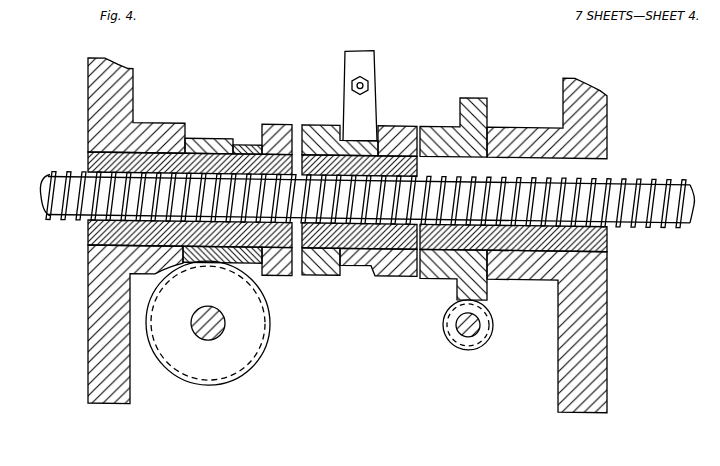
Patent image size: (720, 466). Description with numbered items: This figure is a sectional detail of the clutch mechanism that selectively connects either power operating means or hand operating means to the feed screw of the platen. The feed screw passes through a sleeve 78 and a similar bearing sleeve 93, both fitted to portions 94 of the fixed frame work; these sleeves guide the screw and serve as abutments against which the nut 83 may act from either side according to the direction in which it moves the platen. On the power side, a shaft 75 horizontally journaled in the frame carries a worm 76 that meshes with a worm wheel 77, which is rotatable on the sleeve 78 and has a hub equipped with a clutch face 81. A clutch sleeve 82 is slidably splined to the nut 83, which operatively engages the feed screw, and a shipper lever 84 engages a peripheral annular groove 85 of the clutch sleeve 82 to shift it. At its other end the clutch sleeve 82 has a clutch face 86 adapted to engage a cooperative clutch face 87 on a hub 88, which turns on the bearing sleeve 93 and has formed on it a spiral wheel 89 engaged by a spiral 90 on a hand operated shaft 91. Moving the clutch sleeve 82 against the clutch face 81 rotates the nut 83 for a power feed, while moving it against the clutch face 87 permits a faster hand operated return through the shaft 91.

The shaft 75 is at (468, 333).
The worm 76 is at (487, 340).
The worm wheel 77 is at (484, 302).
The sleeve 78 is at (607, 243).
The clutch face 81 is at (426, 130).
The clutch sleeve 82 is at (412, 130).
The nut 83 is at (338, 273).
The shipper lever 84 is at (376, 97).
The peripheral annular groove 85 is at (370, 268).
The clutch face 86 is at (320, 122).
The clutch face 87 is at (286, 122).
The hub 88 is at (260, 143).
The spiral wheel 89 is at (217, 137).
The spiral 90 is at (246, 356).
The hand operated shaft 91 is at (206, 339).
The bearing sleeve 93 is at (88, 160).
The portions of the fixed frame work 94 is at (88, 271).